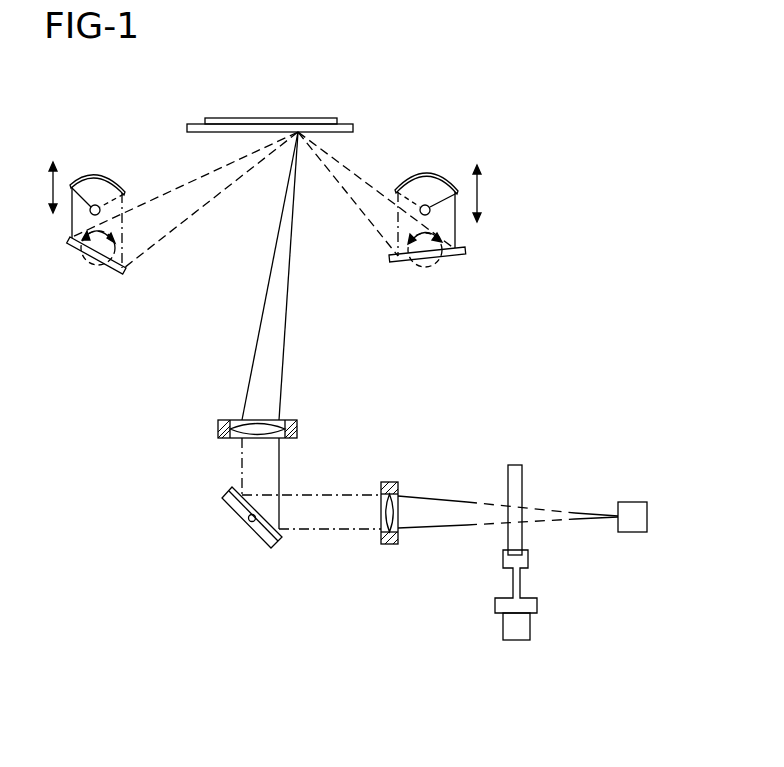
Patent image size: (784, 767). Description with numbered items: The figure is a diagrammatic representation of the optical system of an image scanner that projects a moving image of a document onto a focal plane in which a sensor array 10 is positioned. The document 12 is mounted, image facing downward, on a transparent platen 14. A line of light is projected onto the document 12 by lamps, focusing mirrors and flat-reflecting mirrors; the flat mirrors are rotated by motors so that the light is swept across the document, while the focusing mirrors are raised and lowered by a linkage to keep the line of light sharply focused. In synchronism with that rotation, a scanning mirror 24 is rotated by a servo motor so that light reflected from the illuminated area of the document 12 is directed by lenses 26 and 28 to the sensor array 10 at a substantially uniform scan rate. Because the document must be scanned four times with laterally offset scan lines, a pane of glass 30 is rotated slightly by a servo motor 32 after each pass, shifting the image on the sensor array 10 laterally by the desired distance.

The sensor array 10 is at (640, 517).
The document 12 is at (246, 118).
The transparent platen 14 is at (345, 124).
The scanning mirror 24 is at (262, 534).
The lens 26 is at (222, 430).
The lens 28 is at (388, 482).
The pane of glass 30 is at (515, 465).
The servo motor 32 is at (521, 627).